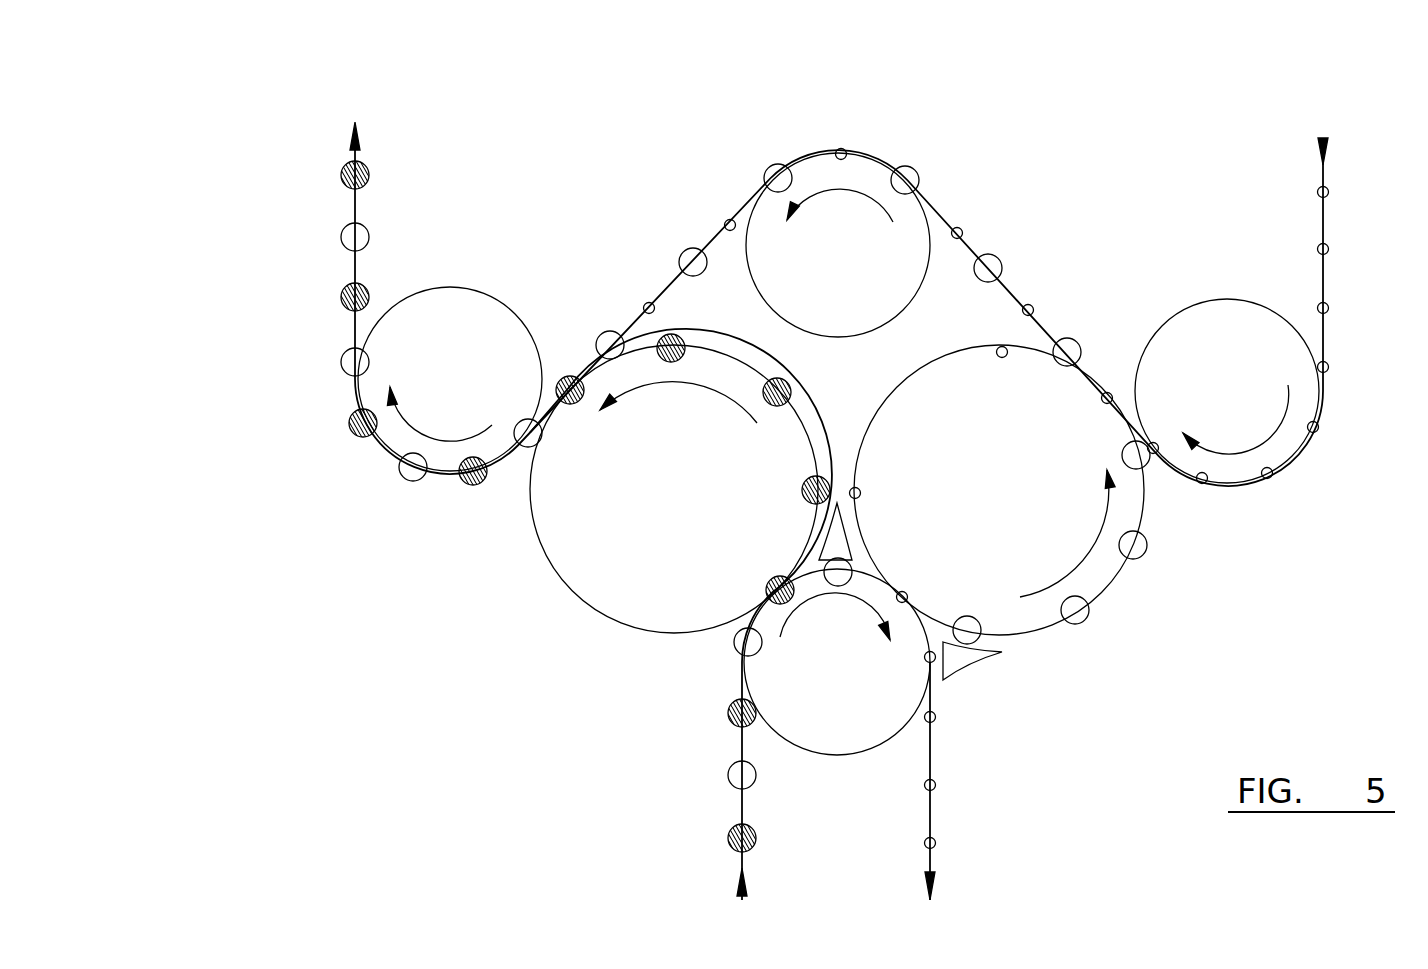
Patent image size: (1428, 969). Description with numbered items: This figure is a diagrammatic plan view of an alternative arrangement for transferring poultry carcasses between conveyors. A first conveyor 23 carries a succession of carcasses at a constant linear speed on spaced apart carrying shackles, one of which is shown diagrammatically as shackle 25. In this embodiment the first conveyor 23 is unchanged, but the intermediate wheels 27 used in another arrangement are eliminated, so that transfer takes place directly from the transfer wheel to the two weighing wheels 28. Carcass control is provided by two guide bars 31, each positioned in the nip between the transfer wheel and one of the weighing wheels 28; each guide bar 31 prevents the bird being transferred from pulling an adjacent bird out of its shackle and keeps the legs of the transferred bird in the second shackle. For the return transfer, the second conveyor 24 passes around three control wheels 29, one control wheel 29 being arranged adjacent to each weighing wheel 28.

The first conveyor 23 is at (740, 864).
The second conveyor 24 is at (352, 208).
The poultry carcass carrying shackle 25 is at (728, 836).
The intermediate wheel 27 is at (905, 687).
The weighing wheel 28 is at (575, 553).
The control wheel 29 is at (470, 305).
The guide bar 31 is at (835, 540).